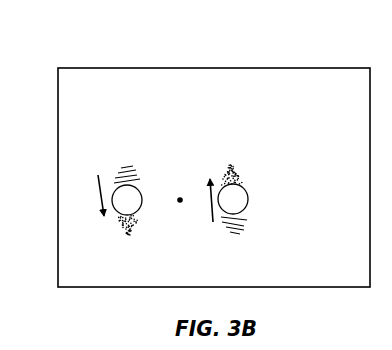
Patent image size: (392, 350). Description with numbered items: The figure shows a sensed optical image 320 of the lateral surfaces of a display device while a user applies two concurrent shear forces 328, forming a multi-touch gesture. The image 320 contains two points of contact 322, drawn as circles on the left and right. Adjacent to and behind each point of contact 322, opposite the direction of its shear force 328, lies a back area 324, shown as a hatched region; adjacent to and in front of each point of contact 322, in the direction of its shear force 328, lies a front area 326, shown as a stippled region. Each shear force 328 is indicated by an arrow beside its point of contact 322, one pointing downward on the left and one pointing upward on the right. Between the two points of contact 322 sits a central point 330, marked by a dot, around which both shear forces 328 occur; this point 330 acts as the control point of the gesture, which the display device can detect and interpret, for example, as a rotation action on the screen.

The sensed optical image 320 is at (72, 53).
The point of contact 322 is at (135, 200).
The back area 324 is at (125, 170).
The front area 326 is at (131, 233).
The shear force 328 is at (101, 209).
The central point 330 is at (184, 186).